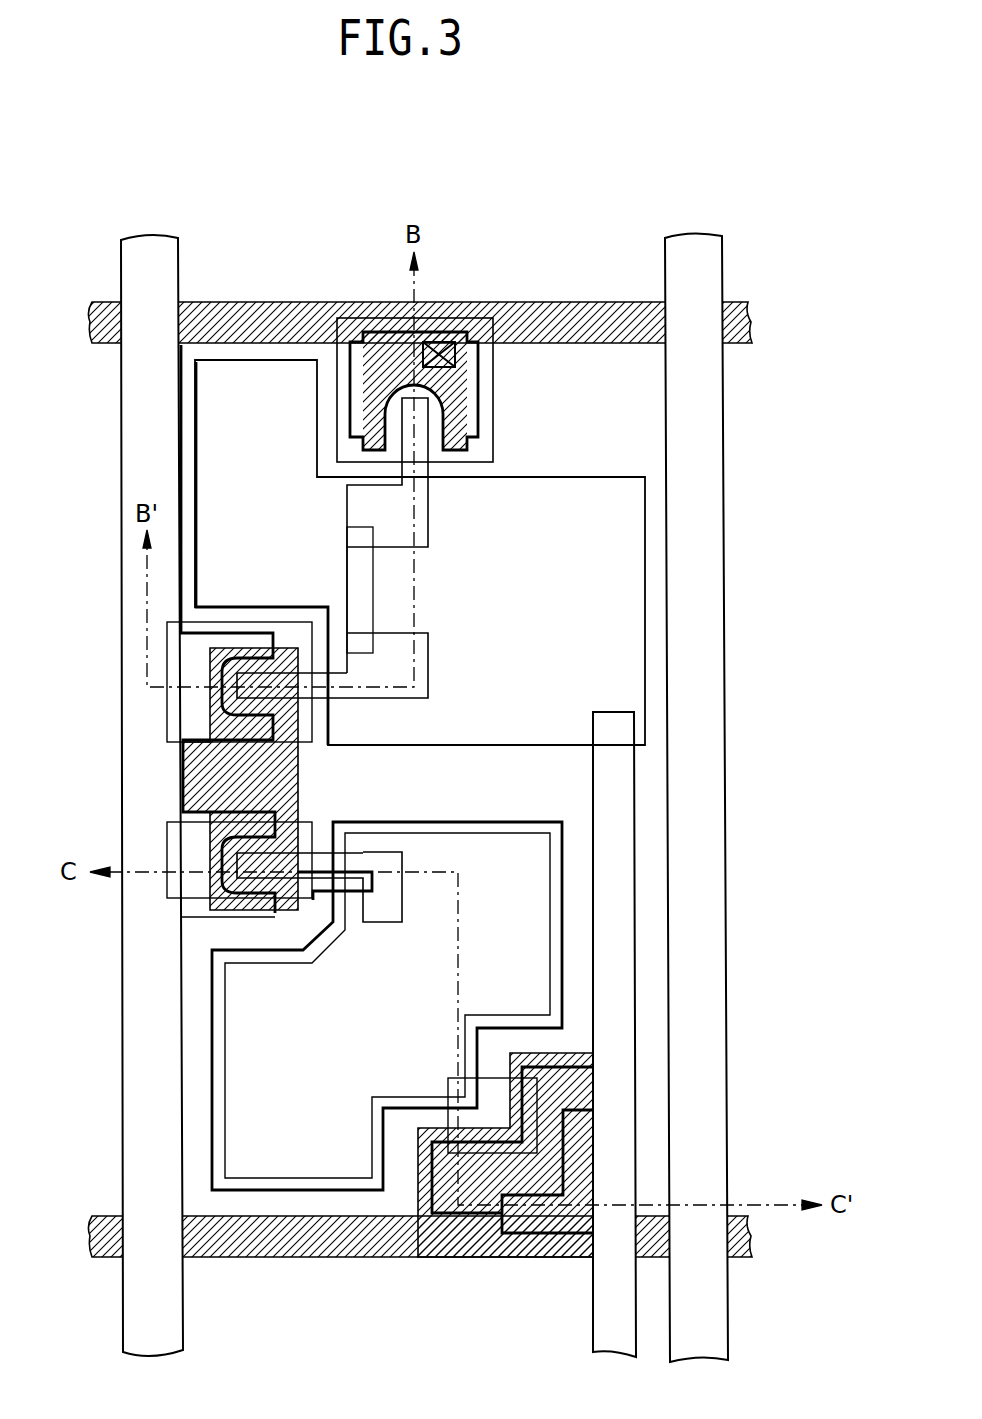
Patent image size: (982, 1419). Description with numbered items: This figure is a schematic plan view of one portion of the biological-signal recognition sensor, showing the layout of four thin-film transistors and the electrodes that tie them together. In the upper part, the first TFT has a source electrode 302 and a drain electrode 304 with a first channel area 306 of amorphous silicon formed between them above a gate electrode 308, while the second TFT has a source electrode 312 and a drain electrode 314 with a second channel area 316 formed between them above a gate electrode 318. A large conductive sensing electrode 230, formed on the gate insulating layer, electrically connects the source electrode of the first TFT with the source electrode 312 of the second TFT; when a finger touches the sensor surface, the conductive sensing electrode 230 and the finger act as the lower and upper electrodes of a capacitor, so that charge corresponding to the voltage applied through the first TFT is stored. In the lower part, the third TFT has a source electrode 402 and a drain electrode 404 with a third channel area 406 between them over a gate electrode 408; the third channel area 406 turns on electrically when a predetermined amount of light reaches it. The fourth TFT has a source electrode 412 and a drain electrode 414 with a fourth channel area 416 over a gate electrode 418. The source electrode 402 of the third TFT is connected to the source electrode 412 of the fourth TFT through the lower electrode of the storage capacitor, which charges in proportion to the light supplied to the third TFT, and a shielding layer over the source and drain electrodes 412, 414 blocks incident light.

The conductive sensing electrode 230 is at (645, 587).
The source electrode 302 is at (428, 527).
The drain electrode 304 is at (478, 388).
The first channel area 306 is at (493, 427).
The gate electrode 308 is at (467, 358).
The source electrode 312 is at (428, 663).
The drain electrode 314 is at (232, 633).
The second channel area 316 is at (297, 608).
The gate electrode 318 is at (208, 708).
The source electrode 402 is at (447, 1088).
The drain electrode 404 is at (542, 1240).
The third channel area 406 is at (443, 1237).
The gate electrode 408 is at (415, 1195).
The source electrode 412 is at (380, 922).
The drain electrode 414 is at (275, 917).
The fourth channel area 416 is at (167, 823).
The gate electrode 418 is at (210, 900).